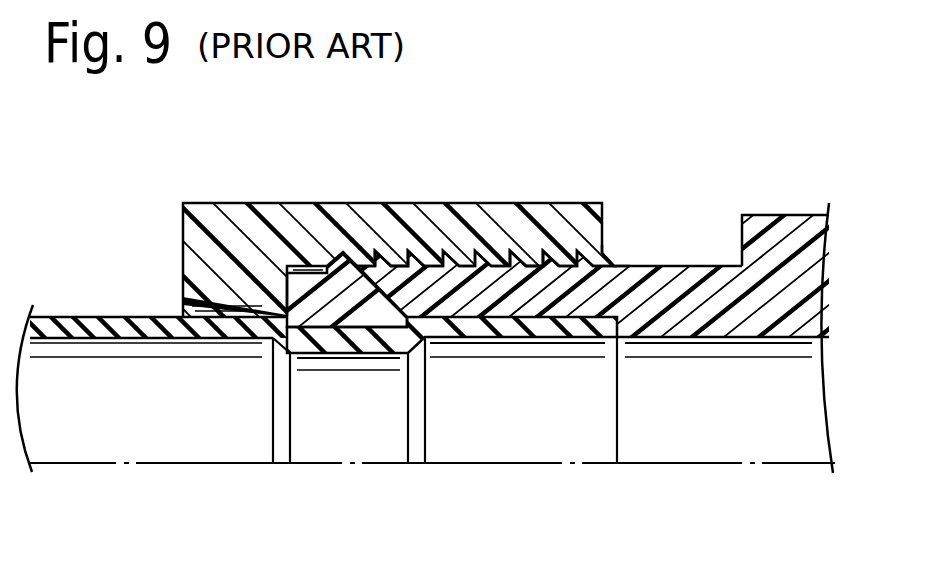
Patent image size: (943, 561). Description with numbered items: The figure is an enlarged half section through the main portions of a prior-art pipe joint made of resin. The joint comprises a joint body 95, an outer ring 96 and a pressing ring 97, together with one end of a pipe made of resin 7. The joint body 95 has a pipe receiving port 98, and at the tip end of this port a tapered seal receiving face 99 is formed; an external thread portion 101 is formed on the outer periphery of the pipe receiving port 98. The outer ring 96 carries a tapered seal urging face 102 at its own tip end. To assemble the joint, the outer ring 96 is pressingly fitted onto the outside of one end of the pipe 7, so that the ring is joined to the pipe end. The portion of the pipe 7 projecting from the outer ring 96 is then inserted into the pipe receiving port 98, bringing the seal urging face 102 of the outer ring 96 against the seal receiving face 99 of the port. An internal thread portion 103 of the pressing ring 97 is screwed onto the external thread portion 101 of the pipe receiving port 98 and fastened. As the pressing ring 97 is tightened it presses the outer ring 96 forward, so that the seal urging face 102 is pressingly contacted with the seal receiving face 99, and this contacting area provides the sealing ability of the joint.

The pipe made of resin 7 is at (57, 312).
The joint body 95 is at (767, 206).
The outer ring 96 is at (339, 262).
The pressing ring 97 is at (207, 198).
The pipe receiving port 98 is at (456, 266).
The tapered seal receiving face 99 is at (402, 278).
The external thread portion 101 is at (514, 262).
The tapered seal urging face 102 is at (390, 262).
The internal thread portion 103 is at (599, 262).